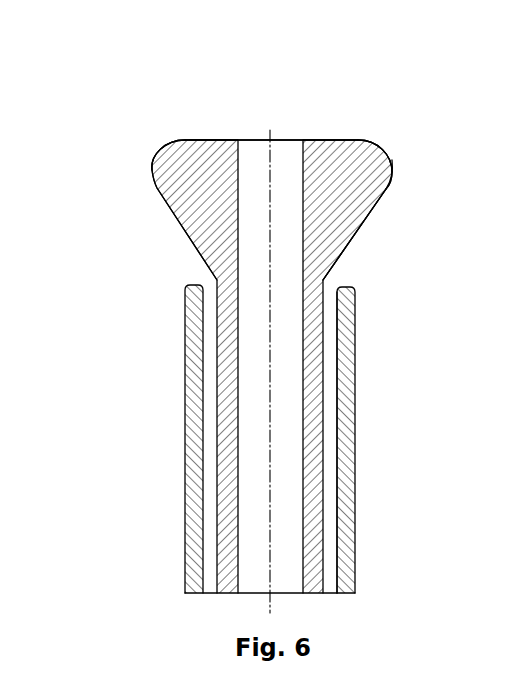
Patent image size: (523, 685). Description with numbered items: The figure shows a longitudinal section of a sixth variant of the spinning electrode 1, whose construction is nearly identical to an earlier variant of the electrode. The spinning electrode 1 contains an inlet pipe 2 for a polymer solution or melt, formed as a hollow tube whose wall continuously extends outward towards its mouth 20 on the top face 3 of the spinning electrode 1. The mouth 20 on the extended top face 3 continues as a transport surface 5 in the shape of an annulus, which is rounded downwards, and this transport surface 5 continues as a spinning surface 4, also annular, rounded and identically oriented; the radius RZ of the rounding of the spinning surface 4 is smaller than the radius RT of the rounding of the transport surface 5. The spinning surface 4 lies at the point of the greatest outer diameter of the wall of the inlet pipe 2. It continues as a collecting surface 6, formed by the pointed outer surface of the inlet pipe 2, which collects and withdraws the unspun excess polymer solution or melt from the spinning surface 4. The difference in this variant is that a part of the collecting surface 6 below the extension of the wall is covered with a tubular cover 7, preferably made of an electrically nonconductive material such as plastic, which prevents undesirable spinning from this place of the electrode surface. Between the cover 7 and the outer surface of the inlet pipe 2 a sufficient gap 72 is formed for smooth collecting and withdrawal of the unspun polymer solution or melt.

The spinning electrode 1 is at (198, 48).
The inlet pipe 2 is at (232, 315).
The top face 3 is at (178, 126).
The spinning surface 4 is at (397, 171).
The transport surface 5 is at (350, 138).
The collecting surface 6 is at (369, 244).
The tubular cover 7 is at (345, 385).
The mouth 20 is at (257, 140).
The gap 72 is at (327, 430).
The radius of rounding of the spinning surface RZ is at (202, 173).
The radius of rounding of the transport surface RT is at (214, 150).